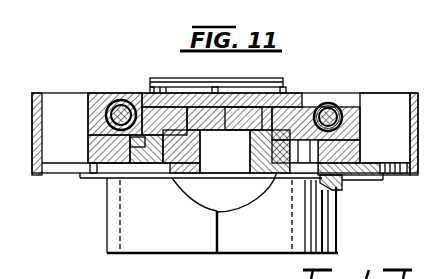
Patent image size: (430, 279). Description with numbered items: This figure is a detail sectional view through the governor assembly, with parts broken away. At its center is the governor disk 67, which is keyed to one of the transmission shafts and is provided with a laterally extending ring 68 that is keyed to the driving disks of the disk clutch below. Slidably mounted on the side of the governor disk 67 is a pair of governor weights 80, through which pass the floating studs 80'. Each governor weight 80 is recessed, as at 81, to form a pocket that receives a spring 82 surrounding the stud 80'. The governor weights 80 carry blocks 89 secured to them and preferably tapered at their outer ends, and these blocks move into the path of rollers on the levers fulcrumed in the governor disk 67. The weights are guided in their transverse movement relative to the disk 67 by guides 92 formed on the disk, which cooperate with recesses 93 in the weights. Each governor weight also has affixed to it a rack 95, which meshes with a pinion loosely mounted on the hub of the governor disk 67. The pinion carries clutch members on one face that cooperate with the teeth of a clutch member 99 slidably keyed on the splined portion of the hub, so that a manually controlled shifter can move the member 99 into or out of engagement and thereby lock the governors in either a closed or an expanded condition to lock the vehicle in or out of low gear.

The governor disk 67 is at (383, 176).
The laterally extending ring 68 is at (178, 236).
The governor weight 80 is at (216, 99).
The floating stud 80' is at (243, 92).
The recess 81 is at (347, 110).
The spring 82 is at (133, 100).
The block 89 is at (216, 88).
The guide 92 is at (285, 106).
The recess 93 is at (297, 112).
The rack 95 is at (140, 143).
The clutch member 99 is at (276, 68).